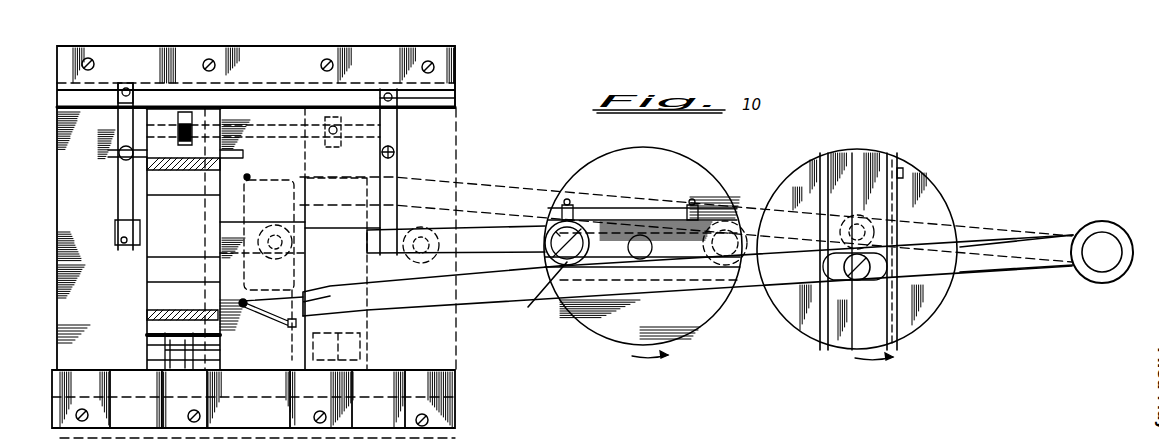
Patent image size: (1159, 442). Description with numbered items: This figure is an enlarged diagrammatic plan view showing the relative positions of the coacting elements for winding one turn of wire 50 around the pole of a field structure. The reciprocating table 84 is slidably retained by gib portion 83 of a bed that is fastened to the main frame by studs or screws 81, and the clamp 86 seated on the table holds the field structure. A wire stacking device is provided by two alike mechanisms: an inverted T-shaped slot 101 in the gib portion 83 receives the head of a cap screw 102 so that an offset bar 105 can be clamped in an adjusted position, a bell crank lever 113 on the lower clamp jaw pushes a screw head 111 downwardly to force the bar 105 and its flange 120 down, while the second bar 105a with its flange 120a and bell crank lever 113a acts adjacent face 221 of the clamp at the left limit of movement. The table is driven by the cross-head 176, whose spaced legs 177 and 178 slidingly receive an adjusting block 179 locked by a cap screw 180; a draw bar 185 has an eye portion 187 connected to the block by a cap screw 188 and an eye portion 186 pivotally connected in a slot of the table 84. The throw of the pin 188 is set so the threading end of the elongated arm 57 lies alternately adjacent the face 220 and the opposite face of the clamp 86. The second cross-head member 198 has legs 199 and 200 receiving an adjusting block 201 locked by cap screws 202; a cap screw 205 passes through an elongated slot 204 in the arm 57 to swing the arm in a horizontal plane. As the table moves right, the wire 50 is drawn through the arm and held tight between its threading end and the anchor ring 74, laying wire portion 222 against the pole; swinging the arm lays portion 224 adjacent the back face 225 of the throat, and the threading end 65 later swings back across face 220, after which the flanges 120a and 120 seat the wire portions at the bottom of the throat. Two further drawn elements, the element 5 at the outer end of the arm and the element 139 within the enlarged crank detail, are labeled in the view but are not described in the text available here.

The eye ring 5 is at (1132, 243).
The wire 50 is at (412, 326).
The elongated arm 57 is at (990, 274).
The threading end 65 is at (240, 303).
The anchor ring 74 is at (290, 322).
The studs or screws 81 is at (91, 58).
The gib portion 83 is at (458, 108).
The reciprocating table 84 is at (57, 237).
The clamp 86 is at (150, 278).
The inverted T-shaped slot 101 is at (458, 92).
The cap screw 102 is at (130, 86).
The offset bar 105 is at (397, 112).
The offset bar 105a is at (118, 188).
The screw head 111 is at (396, 153).
The bell crank lever 113 is at (271, 145).
The bell crank lever 113a is at (119, 153).
The flange 120 is at (378, 256).
The flange 120a is at (137, 248).
The roller 139 is at (713, 243).
The cross-head 176 is at (666, 152).
The leg 177 is at (708, 303).
The leg 178 is at (727, 197).
The adjusting block 179 is at (553, 273).
The cap screw 180 is at (563, 203).
The draw bar 185 is at (470, 254).
The eye portion 186 is at (258, 279).
The eye portion 187 is at (549, 221).
The cap screw 188 is at (530, 310).
The cross-head member 198 is at (902, 172).
The leg 199 is at (833, 135).
The leg 200 is at (888, 153).
The adjusting block 201 is at (852, 170).
The cap screws 202 is at (902, 172).
The elongated slot 204 is at (848, 276).
The cap screw 205 is at (892, 268).
The face 220 is at (224, 175).
The face 221 is at (150, 300).
The wire portion 222 is at (280, 318).
The wire portion 224 is at (263, 203).
The back face 225 is at (269, 235).